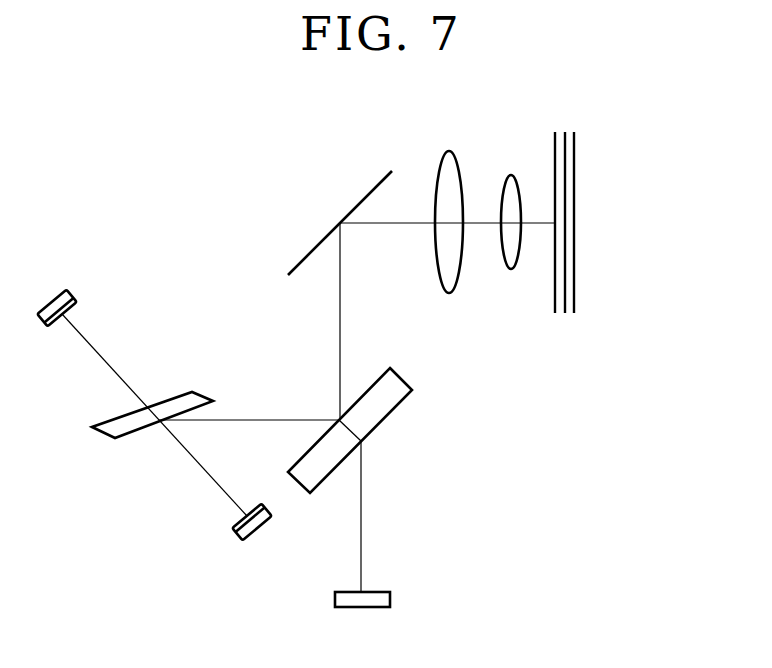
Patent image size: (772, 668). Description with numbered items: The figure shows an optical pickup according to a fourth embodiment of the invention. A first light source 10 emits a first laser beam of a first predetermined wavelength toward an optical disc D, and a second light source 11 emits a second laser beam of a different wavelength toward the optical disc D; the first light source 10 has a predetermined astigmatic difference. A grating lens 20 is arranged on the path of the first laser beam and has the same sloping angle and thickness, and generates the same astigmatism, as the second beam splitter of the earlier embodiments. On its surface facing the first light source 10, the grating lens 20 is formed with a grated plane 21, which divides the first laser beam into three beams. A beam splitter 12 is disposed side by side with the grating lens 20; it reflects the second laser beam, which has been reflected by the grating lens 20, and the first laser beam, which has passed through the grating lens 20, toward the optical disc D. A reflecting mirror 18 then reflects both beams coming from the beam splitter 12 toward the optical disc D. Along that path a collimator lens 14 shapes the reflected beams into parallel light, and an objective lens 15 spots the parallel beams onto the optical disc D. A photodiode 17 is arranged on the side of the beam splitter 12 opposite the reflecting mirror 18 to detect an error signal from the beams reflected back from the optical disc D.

The first light source 10 is at (52, 298).
The second light source 11 is at (256, 530).
The beam splitter 12 is at (385, 422).
The collimator lens 14 is at (438, 275).
The objective lens 15 is at (498, 265).
The photodiode 17 is at (391, 598).
The reflecting mirror 18 is at (321, 240).
The grating lens 20 is at (201, 374).
The grated plane 21 is at (143, 407).
The optical disc D is at (576, 266).